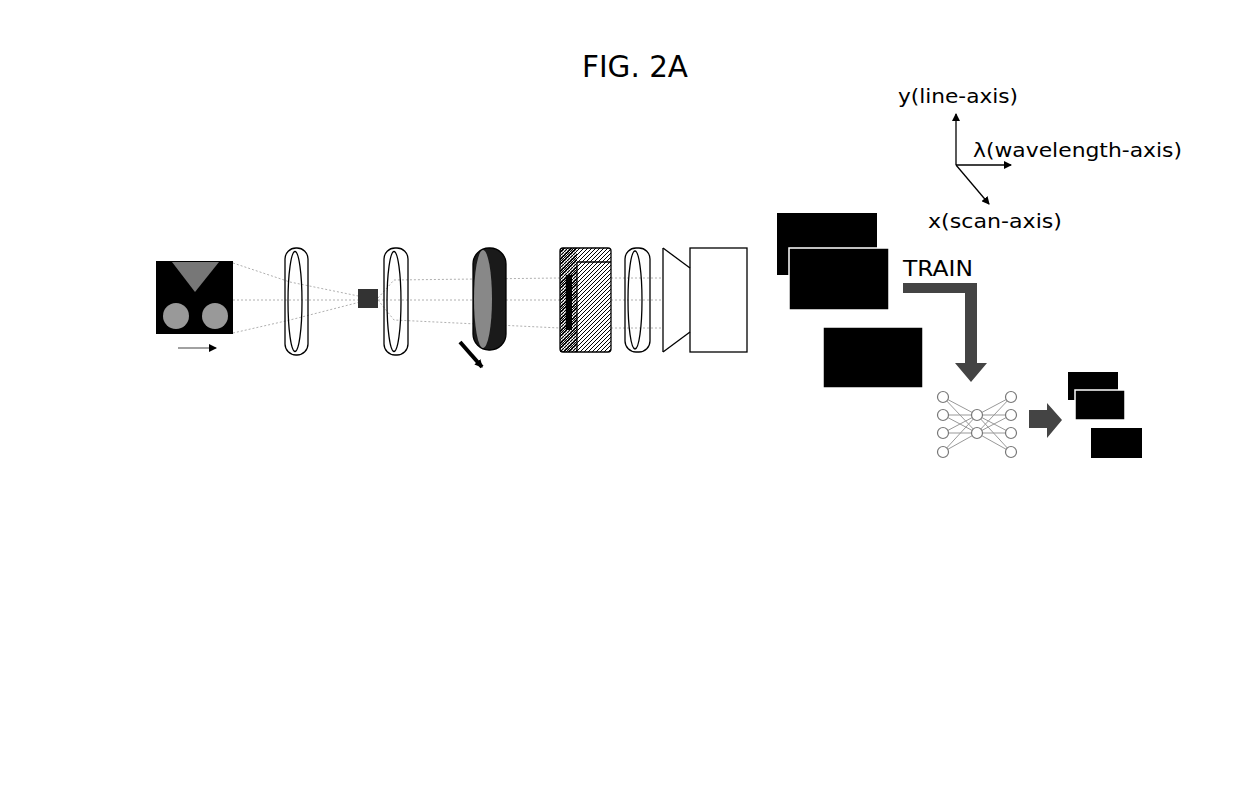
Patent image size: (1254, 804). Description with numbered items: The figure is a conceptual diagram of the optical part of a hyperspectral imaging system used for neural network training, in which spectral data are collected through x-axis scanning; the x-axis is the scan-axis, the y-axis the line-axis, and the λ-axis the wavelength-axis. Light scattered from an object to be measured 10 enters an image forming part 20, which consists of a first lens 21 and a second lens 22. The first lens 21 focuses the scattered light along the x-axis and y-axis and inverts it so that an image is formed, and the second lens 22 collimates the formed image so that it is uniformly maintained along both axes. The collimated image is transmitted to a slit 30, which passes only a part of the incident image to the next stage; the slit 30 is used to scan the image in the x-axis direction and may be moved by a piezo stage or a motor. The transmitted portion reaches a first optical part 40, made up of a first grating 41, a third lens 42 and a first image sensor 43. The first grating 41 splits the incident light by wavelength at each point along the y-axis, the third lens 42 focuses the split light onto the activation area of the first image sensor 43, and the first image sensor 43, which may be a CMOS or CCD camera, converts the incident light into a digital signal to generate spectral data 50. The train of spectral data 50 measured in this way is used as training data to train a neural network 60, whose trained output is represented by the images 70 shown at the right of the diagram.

The object to be measured 10 is at (200, 260).
The image forming part 20 is at (347, 300).
The first lens 21 is at (294, 357).
The second lens 22 is at (397, 357).
The slit 30 is at (487, 246).
The first optical part 40 is at (653, 300).
The first grating 41 is at (592, 355).
The third lens 42 is at (637, 355).
The first image sensor 43 is at (711, 355).
The spectral data 50 is at (852, 212).
The neural network 60 is at (935, 433).
The output images 70 is at (1100, 372).